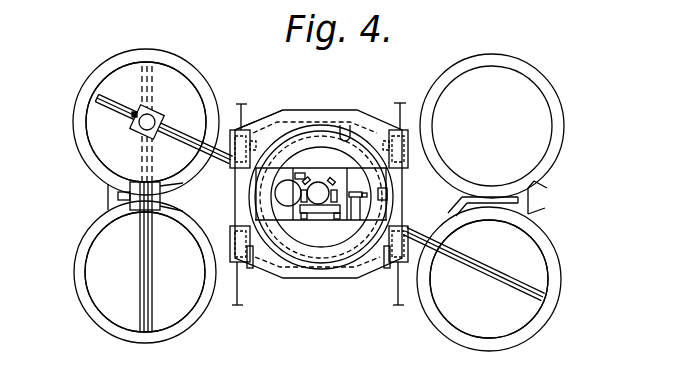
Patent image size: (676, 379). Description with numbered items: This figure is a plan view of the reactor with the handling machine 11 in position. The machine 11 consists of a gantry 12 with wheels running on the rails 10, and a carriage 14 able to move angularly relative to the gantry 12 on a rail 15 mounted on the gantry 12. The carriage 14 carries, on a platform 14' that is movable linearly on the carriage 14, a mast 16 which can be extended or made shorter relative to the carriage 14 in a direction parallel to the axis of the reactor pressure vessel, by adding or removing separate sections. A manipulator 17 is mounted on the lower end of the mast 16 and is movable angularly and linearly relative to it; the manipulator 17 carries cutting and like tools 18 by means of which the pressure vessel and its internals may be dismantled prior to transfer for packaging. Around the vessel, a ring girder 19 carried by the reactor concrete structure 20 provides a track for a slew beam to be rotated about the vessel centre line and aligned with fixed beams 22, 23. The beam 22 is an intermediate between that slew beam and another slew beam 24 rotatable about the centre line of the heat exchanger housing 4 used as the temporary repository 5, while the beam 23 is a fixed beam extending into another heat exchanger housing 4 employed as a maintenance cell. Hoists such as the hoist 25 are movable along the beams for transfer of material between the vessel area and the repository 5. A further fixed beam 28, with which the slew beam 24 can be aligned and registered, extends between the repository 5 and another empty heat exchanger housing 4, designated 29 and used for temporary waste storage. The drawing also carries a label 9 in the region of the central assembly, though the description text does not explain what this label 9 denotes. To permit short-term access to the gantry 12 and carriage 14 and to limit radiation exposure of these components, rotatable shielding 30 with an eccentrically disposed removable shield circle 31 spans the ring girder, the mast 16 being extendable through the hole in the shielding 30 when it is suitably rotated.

The heat exchanger housing 4 is at (76, 136).
The temporary repository 5 is at (112, 145).
The carriage 9 is at (422, 188).
The rails 10 is at (238, 126).
The handling machine 11 is at (339, 104).
The gantry 12 is at (270, 117).
The carriage 14 is at (286, 149).
The platform 14' is at (372, 126).
The rail 15 is at (337, 176).
The mast 16 is at (322, 205).
The manipulator 17 is at (356, 222).
The cutting tools 18 is at (362, 226).
The ring girder 19 is at (253, 197).
The reactor concrete structure 20 is at (448, 211).
The fixed beam 22 is at (203, 150).
The fixed beam 23 is at (487, 272).
The slew beam 24 is at (178, 128).
The hoist 25 is at (455, 289).
The fixed beam 28 is at (149, 250).
The temporary waste storage housing 29 is at (108, 272).
The rotatable shielding 30 is at (312, 237).
The removable shield circle 31 is at (288, 186).